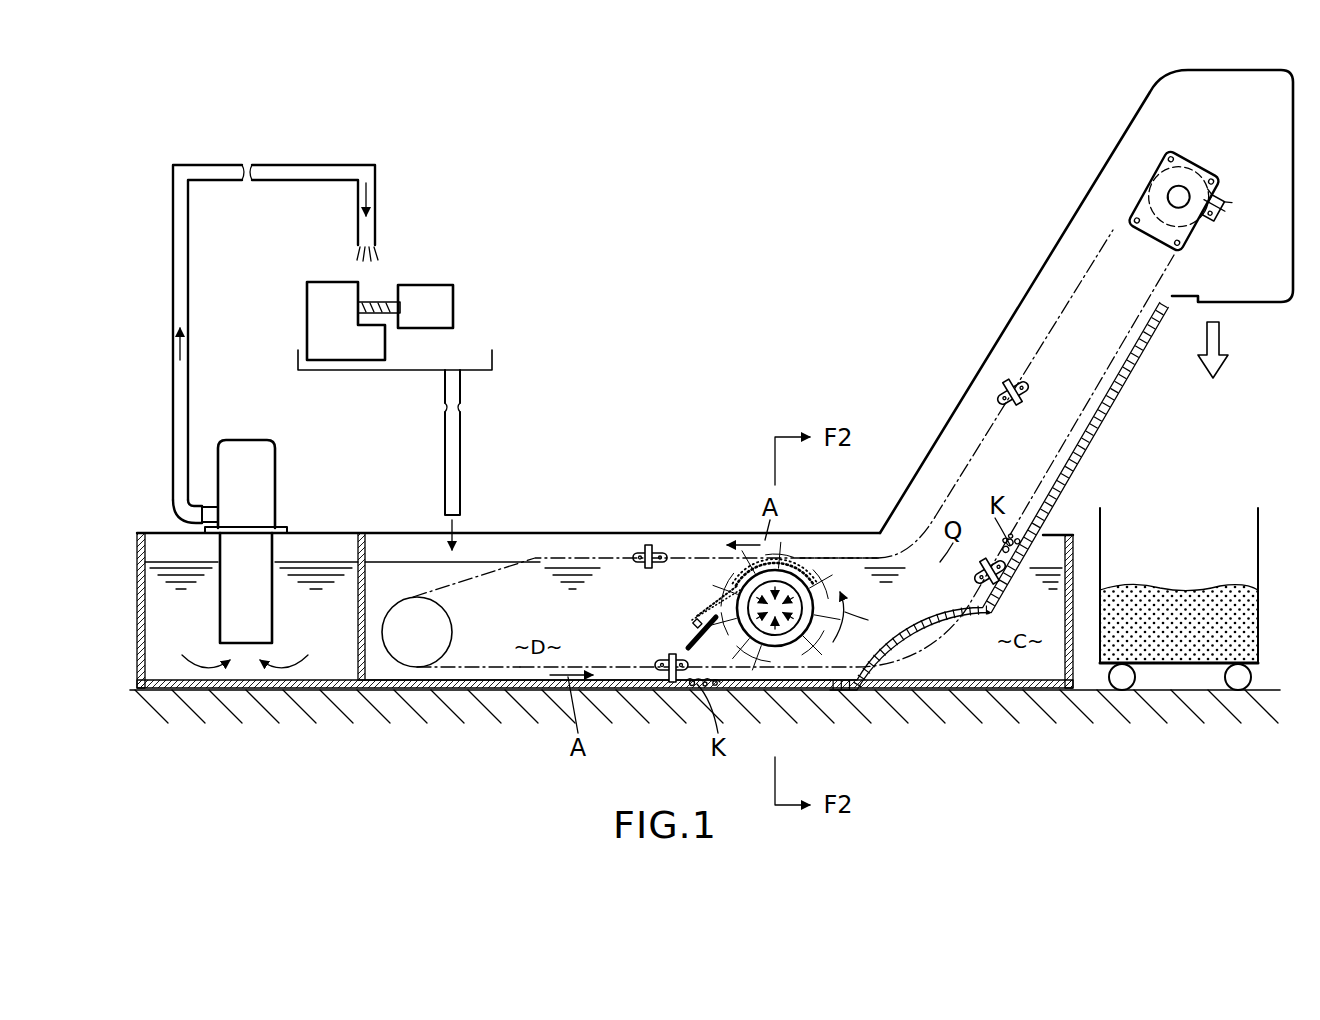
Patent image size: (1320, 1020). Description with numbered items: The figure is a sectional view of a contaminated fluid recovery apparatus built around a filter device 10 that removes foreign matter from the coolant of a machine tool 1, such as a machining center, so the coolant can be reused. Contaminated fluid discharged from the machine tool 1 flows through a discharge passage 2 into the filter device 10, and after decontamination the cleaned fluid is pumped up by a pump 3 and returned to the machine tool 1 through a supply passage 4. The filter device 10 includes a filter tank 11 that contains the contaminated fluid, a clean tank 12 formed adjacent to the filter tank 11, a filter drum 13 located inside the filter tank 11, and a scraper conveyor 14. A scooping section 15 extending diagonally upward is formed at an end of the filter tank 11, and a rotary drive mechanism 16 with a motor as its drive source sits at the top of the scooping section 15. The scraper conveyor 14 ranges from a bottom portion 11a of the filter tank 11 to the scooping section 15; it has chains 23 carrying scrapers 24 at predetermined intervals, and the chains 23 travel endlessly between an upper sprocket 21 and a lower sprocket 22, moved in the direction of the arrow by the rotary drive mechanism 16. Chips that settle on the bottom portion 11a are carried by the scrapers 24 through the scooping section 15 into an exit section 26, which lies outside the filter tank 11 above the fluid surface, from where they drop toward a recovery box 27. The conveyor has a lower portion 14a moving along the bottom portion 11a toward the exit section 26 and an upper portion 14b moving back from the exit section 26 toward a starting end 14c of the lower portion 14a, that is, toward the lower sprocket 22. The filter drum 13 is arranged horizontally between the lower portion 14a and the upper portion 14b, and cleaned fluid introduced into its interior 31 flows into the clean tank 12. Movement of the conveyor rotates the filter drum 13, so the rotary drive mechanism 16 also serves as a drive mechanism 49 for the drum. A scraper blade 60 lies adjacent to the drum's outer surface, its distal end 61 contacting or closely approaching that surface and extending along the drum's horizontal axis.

The machine tool 1 is at (472, 290).
The discharge passage 2 is at (460, 455).
The pump 3 is at (275, 480).
The supply passage 4 is at (173, 262).
The filter device 10 is at (635, 428).
The filter tank 11 is at (590, 533).
The bottom portion 11a is at (528, 690).
The clean tank 12 is at (360, 532).
The filter drum 13 is at (803, 642).
The scraper conveyor 14 is at (573, 545).
The lower portion 14a is at (778, 668).
The upper portion 14b is at (703, 558).
The starting end 14c is at (420, 665).
The scooping section 15 is at (1115, 410).
The rotary drive mechanism 16 is at (1160, 165).
The upper sprocket 21 is at (1195, 170).
The lower sprocket 22 is at (405, 648).
The chains 23 is at (1033, 365).
The scrapers 24 is at (647, 548).
The exit section 26 is at (1248, 304).
The recovery box 27 is at (1262, 540).
The interior 31 is at (770, 600).
The drive mechanism 49 is at (812, 547).
The scraper blade 60 is at (700, 598).
The distal end 61 is at (735, 588).